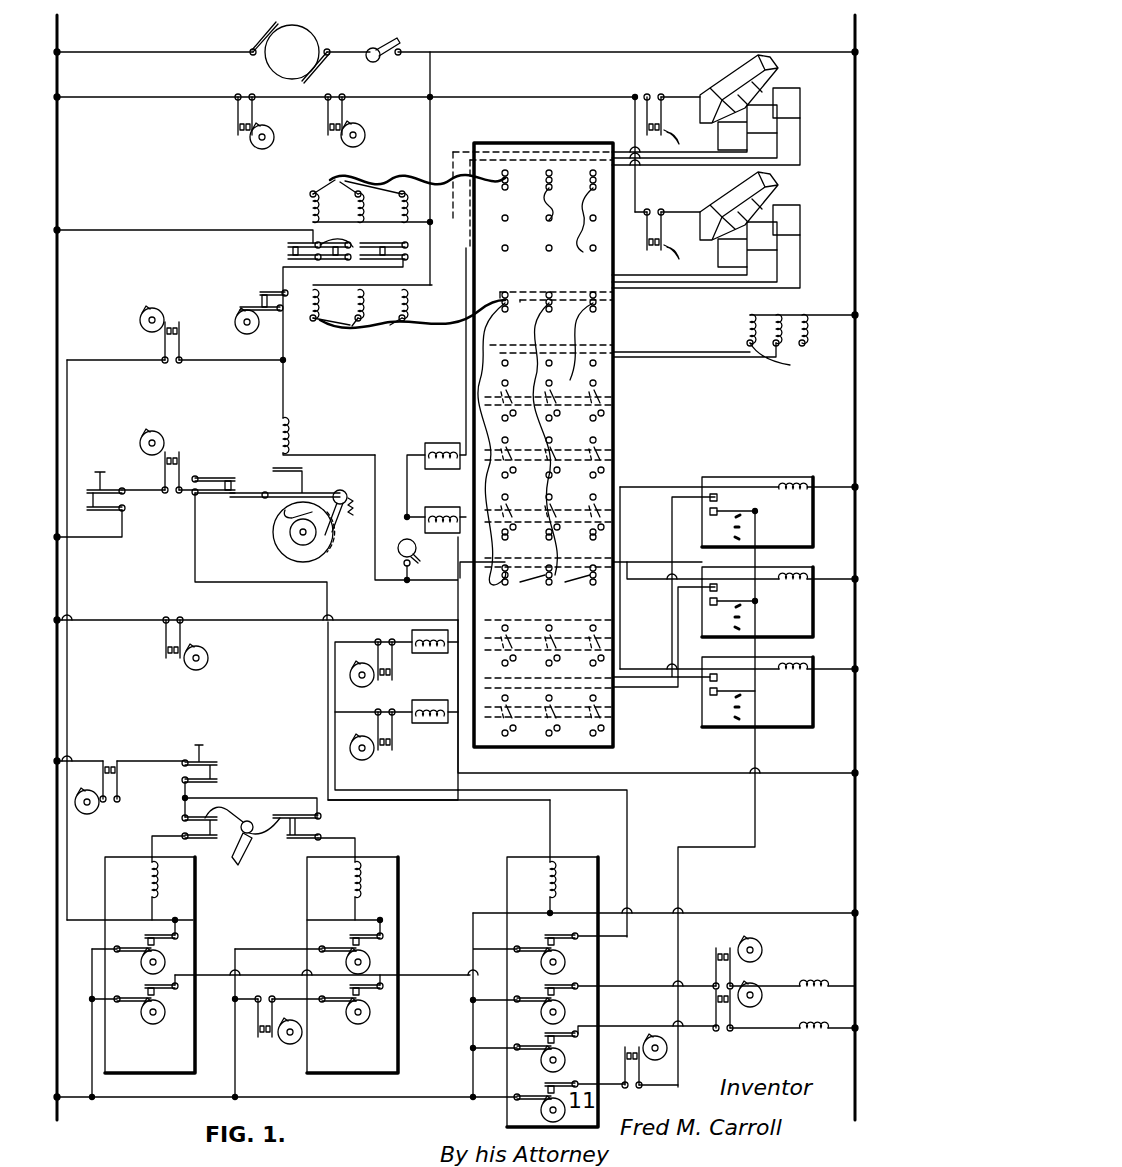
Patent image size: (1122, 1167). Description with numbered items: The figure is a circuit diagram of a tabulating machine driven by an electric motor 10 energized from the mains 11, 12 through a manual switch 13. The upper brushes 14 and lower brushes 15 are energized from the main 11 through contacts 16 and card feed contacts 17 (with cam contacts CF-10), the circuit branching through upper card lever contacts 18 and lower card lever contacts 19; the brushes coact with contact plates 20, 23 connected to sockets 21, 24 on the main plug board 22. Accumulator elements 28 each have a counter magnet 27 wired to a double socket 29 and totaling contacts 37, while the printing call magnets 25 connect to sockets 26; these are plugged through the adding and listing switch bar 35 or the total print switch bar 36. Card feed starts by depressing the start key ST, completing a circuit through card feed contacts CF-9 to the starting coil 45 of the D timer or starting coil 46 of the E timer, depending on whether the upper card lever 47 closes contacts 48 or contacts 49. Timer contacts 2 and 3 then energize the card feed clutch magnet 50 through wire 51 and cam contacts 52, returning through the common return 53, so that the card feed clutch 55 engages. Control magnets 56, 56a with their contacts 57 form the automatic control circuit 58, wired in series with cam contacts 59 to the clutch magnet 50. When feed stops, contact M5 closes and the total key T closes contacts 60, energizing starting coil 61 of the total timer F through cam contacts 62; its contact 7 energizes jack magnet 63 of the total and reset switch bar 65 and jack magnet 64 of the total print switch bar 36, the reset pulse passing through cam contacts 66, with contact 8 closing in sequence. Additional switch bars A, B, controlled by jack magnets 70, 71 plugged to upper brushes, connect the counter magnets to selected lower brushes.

The electric motor 10 is at (300, 50).
The main 11 is at (58, 158).
The main 12 is at (852, 28).
The manual switch 13 is at (398, 38).
The upper brushes 14 is at (768, 78).
The lower brushes 15 is at (768, 195).
The contacts 16 is at (238, 115).
The card feed contacts 17 is at (330, 115).
The upper card lever contacts 18 is at (655, 120).
The lower card lever contacts 19 is at (658, 232).
The contact plates 20 is at (745, 138).
The sockets 21 is at (590, 172).
The main plug board 22 is at (605, 370).
The contact plates 23 is at (745, 257).
The sockets 24 is at (592, 298).
The call magnets 25 is at (804, 345).
The sockets 26 is at (541, 444).
The counter magnet 27 is at (788, 480).
The accumulator elements 28 is at (757, 602).
The double socket 29 is at (528, 583).
The adding and listing switch bar 35 is at (612, 403).
The total print switch bar 36 is at (612, 715).
The totaling contacts 37 is at (716, 492).
The starting coil 45 is at (365, 880).
The starting coil 46 is at (160, 883).
The upper card lever 47 is at (250, 832).
The contacts 48 is at (305, 830).
The contacts 49 is at (185, 830).
The card feed clutch magnet 50 is at (290, 428).
The wire 51 is at (68, 400).
The cam contacts 52 is at (174, 338).
The common return 53 is at (375, 538).
The card feed clutch 55 is at (290, 533).
The control magnet 56 is at (407, 187).
The control magnet 56a is at (407, 319).
The contacts 57 is at (378, 245).
The automatic control circuit 58 is at (185, 232).
The cam contacts 59 is at (252, 296).
The contacts 60 is at (112, 505).
The starting coil 61 is at (556, 878).
The cam contacts 62 is at (174, 452).
The jack magnet 63 is at (428, 653).
The jack magnet 64 is at (428, 723).
The total and reset switch bar 65 is at (612, 640).
The cam contacts 66 is at (178, 668).
The jack magnet 70 is at (437, 445).
The jack magnet 71 is at (447, 532).
The switch bar A is at (612, 455).
The switch bar B is at (612, 520).
The total key T is at (112, 480).
The contact M5 is at (250, 470).
The start key ST is at (215, 775).
The card feed contacts CF-9 is at (123, 787).
The card feed contacts CF-10 is at (400, 135).
The timer E is at (150, 965).
The timer D is at (352, 965).
The total timer F is at (552, 992).
The timer contacts 2 is at (237, 1010).
The timer contacts 3 is at (403, 1007).
The contact 7 is at (547, 1005).
The timer contact 8 is at (594, 1046).